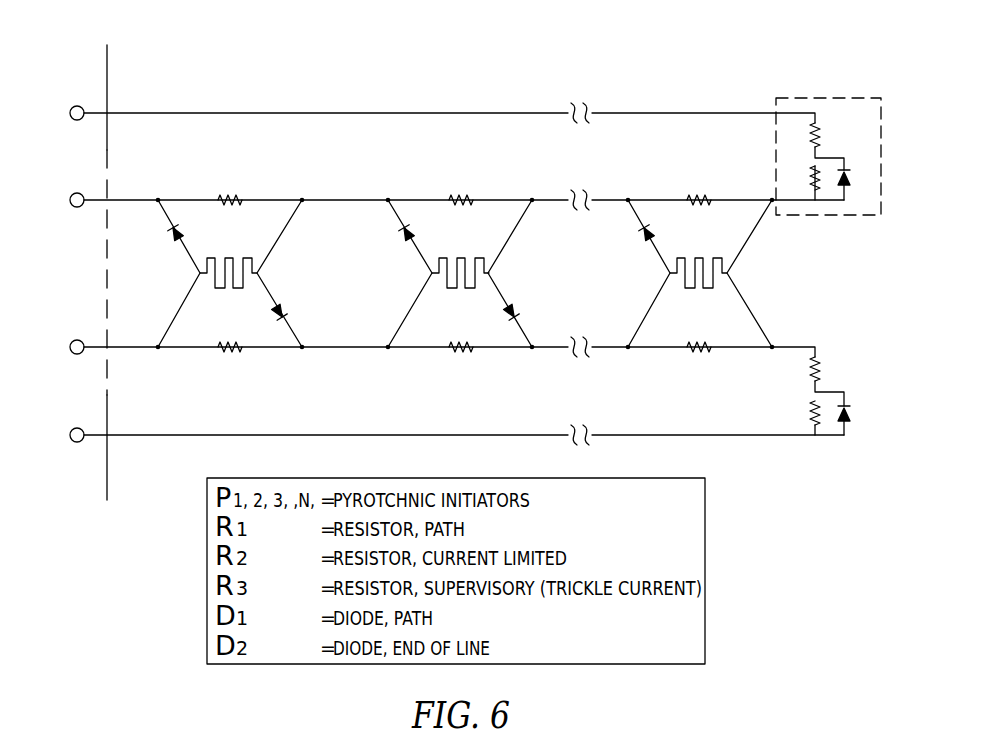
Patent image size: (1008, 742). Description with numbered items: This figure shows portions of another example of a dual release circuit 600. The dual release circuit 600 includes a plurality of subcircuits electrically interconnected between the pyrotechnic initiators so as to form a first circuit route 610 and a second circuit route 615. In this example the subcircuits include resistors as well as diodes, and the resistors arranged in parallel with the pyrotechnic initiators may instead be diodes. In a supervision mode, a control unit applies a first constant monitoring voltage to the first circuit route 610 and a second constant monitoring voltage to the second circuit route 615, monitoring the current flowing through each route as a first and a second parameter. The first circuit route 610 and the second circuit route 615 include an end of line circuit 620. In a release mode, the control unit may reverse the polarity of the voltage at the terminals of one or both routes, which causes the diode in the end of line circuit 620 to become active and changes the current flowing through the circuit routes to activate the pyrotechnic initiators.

The dual release circuit 600 is at (806, 29).
The first circuit route 610 is at (120, 200).
The second circuit route 615 is at (120, 347).
The end of line circuit 620 is at (828, 98).